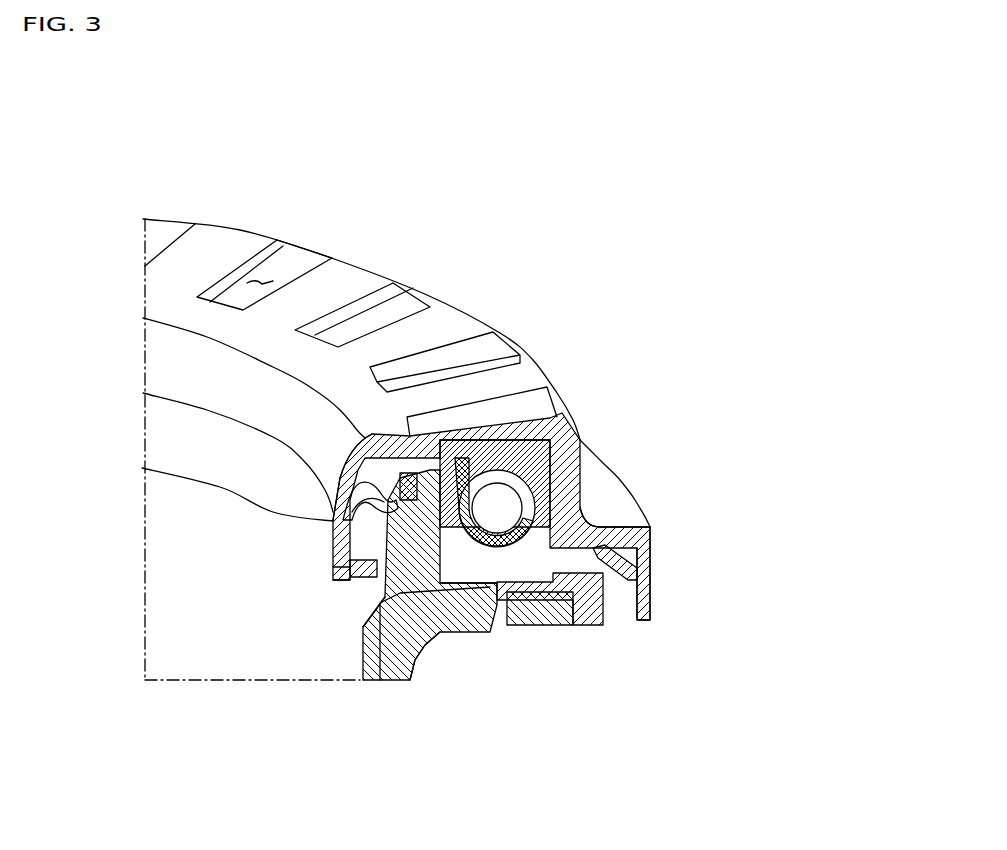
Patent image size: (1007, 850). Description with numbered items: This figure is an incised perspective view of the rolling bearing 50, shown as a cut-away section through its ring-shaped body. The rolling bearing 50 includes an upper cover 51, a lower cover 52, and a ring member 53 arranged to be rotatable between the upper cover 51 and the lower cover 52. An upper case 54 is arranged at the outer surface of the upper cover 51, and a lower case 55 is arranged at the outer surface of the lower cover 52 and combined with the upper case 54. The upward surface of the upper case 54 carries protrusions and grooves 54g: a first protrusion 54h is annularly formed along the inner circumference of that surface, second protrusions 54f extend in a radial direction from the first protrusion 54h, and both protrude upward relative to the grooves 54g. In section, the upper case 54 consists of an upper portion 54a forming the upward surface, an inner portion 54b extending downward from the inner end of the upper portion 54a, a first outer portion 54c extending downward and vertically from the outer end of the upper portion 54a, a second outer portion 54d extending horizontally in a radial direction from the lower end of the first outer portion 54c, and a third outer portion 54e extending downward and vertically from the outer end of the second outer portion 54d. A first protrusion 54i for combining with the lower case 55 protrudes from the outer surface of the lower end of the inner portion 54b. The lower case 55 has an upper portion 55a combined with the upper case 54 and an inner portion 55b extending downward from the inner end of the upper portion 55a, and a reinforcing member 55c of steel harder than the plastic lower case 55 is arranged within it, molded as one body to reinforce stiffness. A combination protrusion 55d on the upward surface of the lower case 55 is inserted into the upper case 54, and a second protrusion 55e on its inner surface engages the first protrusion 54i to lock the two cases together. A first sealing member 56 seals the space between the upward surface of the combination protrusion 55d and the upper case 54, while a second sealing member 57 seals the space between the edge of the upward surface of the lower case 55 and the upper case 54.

The rolling bearing 50 is at (94, 126).
The upper cover 51 is at (585, 570).
The lower cover 52 is at (500, 512).
The ring member 53 is at (543, 570).
The upper case 54 is at (420, 188).
The upper portion 54a is at (470, 440).
The inner portion 54b is at (338, 478).
The first outer portion 54c is at (553, 477).
The second outer portion 54d is at (600, 520).
The third outer portion 54e is at (651, 543).
The second protrusions 54f is at (205, 255).
The grooves 54g is at (258, 280).
The first protrusion 54h is at (210, 317).
The first protrusion 54i is at (347, 590).
The lower case 55 is at (458, 760).
The upper portion 55a is at (447, 630).
The inner portion 55b is at (405, 675).
The reinforcing member 55c is at (498, 580).
The combination protrusion 55d is at (350, 620).
The second protrusion 55e is at (333, 567).
The first sealing member 56 is at (333, 522).
The second sealing member 57 is at (625, 567).